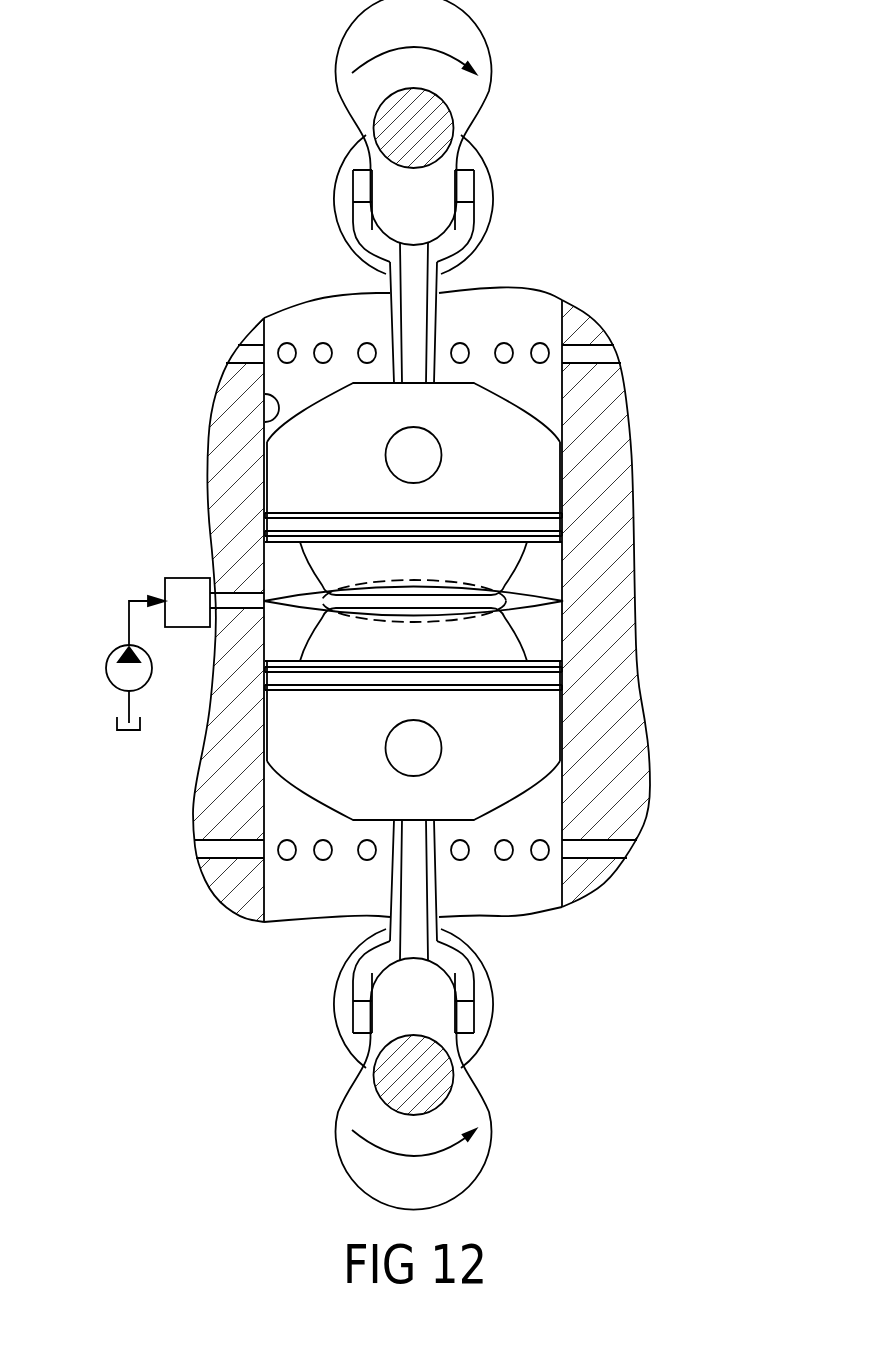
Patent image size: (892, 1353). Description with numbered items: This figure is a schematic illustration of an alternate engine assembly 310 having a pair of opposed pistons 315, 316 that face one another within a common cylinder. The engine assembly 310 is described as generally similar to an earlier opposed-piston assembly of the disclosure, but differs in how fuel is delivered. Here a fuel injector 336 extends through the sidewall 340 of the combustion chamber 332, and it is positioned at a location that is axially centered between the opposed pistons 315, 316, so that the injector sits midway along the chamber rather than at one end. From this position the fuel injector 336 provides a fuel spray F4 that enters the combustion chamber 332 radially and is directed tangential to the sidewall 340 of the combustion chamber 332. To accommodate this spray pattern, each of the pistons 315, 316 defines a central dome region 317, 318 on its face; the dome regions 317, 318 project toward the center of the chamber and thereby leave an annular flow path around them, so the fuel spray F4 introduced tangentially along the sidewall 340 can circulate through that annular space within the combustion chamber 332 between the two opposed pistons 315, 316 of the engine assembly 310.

The engine assembly 310 is at (149, 333).
The sidewall 340 is at (265, 394).
The piston 315 is at (537, 437).
The piston 316 is at (283, 788).
The central dome region 317 is at (463, 598).
The central dome region 318 is at (358, 607).
The combustion chamber 332 is at (550, 578).
The fuel injector 336 is at (165, 587).
The fuel spray F4 is at (565, 596).